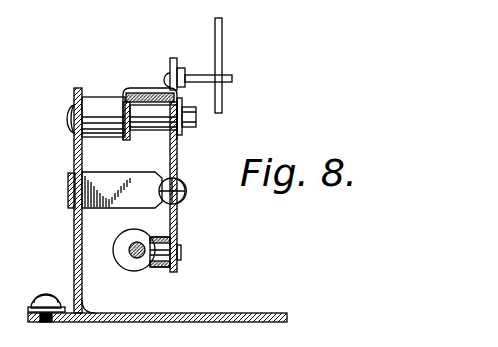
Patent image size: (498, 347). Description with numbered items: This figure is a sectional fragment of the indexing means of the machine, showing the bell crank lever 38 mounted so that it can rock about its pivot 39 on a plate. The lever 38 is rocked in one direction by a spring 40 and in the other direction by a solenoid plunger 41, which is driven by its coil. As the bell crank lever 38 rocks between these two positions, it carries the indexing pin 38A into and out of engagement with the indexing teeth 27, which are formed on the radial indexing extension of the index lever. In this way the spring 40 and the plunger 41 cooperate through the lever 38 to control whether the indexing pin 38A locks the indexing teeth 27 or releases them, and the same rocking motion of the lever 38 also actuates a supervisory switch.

The pivot 39 is at (92, 103).
The bell crank lever 38 is at (138, 92).
The indexing pin 38A is at (233, 73).
The indexing teeth 27 is at (228, 105).
The spring 40 is at (185, 200).
The solenoid plunger 41 is at (137, 271).